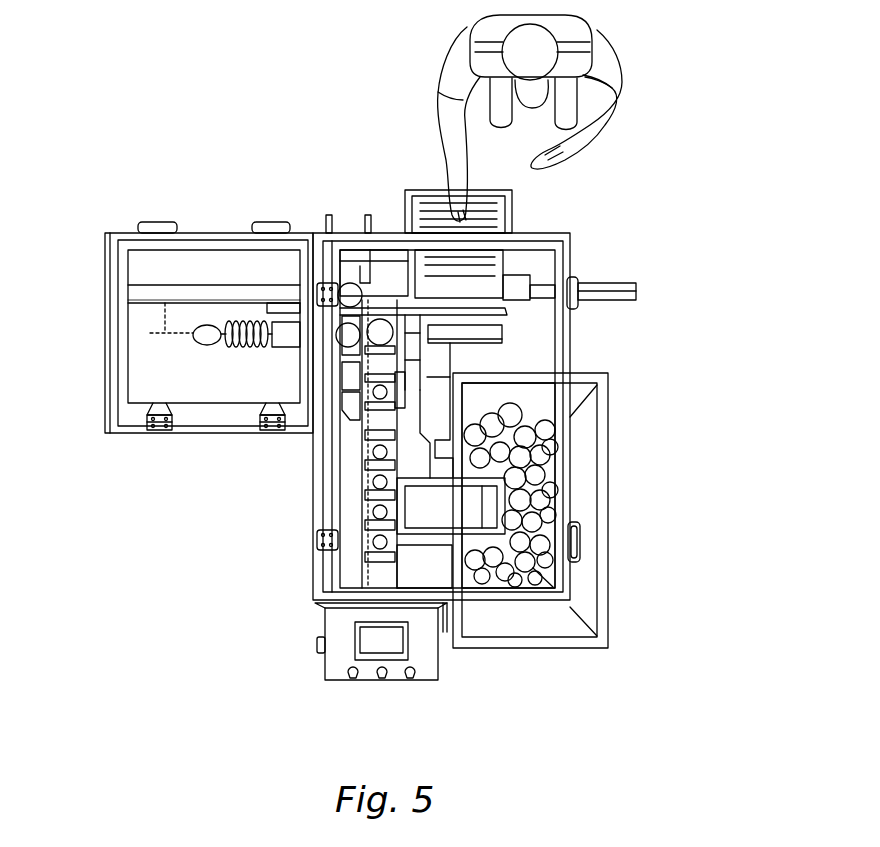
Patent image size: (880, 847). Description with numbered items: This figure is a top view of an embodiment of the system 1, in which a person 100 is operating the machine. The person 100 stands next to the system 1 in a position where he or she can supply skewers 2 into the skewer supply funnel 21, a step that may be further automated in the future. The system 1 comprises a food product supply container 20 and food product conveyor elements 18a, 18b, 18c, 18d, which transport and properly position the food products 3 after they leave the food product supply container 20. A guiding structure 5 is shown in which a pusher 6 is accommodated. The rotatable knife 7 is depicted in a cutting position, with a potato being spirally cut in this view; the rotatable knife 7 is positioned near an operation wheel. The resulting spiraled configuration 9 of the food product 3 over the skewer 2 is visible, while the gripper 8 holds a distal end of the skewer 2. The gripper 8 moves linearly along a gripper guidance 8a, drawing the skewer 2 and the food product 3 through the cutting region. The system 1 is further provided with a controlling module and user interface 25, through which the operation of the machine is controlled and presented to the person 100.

The system 1 is at (92, 126).
The skewer 2 is at (225, 332).
The food product 3 is at (543, 503).
The guiding structure 5 is at (647, 293).
The pusher 6 is at (637, 292).
The rotatable knife 7 is at (288, 330).
The gripper 8 is at (155, 333).
The gripper guidance 8a is at (170, 305).
The spiraled configuration 9 is at (245, 323).
The food product conveyor element 18a is at (368, 536).
The food product conveyor element 18b is at (368, 508).
The food product conveyor element 18c is at (368, 480).
The food product conveyor element 18d is at (368, 450).
The food product supply container 20 is at (588, 580).
The skewer supply funnel 21 is at (428, 190).
The controlling module and user interface 25 is at (425, 658).
The person 100 is at (600, 48).